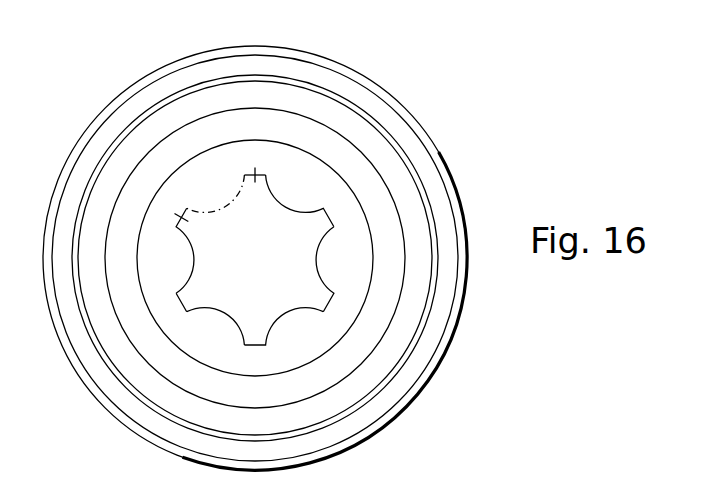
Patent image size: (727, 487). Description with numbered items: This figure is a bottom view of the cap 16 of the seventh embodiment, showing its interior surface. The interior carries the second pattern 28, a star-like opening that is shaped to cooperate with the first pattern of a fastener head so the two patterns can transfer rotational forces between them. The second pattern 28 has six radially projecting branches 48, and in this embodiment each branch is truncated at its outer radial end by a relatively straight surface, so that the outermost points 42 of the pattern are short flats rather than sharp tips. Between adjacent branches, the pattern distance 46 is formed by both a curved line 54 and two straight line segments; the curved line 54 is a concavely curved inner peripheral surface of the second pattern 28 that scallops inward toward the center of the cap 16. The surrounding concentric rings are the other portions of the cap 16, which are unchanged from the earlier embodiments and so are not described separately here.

The cap 16 is at (440, 141).
The second pattern 28 is at (333, 255).
The outermost points 42 is at (264, 174).
The pattern distance 46 is at (213, 207).
The branches 48 is at (257, 331).
The curved line 54 is at (223, 320).